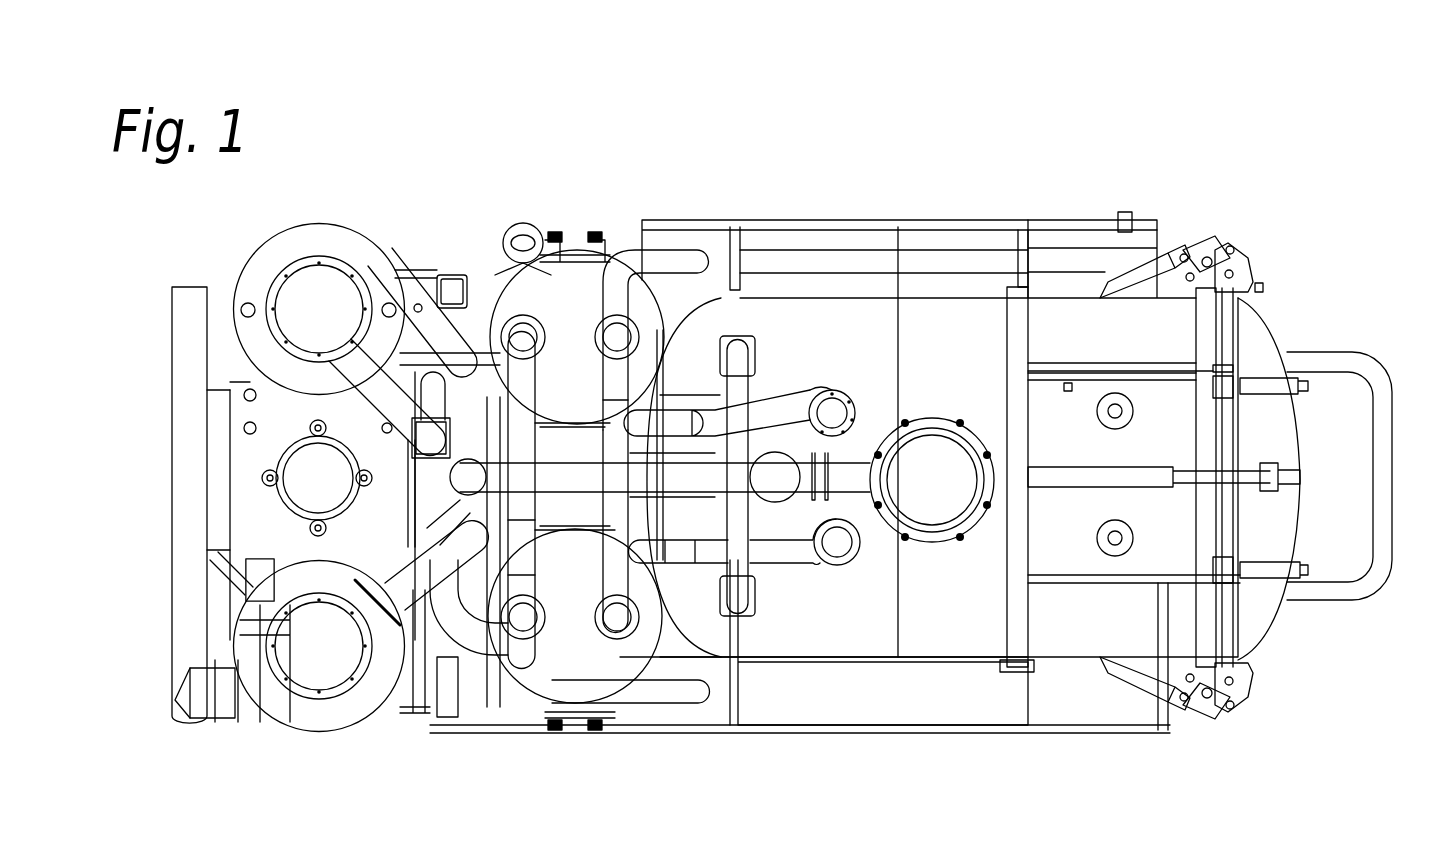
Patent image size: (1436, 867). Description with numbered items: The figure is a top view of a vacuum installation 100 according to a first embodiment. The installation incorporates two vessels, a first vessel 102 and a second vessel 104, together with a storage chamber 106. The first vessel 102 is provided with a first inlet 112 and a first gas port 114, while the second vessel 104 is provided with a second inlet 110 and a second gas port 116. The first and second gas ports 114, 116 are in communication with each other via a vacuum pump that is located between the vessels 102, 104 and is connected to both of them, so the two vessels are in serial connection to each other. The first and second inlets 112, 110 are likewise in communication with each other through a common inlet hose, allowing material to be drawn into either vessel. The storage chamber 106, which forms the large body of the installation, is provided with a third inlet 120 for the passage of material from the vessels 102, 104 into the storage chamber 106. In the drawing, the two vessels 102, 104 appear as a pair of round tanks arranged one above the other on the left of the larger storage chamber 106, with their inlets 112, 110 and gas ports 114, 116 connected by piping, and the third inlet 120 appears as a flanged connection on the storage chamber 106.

The vacuum installation 100 is at (948, 168).
The first vessel 102 is at (577, 273).
The second vessel 104 is at (598, 653).
The storage chamber 106 is at (1100, 625).
The second inlet 110 is at (542, 632).
The first inlet 112 is at (521, 313).
The first gas port 114 is at (637, 337).
The second gas port 116 is at (630, 622).
The third inlet 120 is at (832, 390).